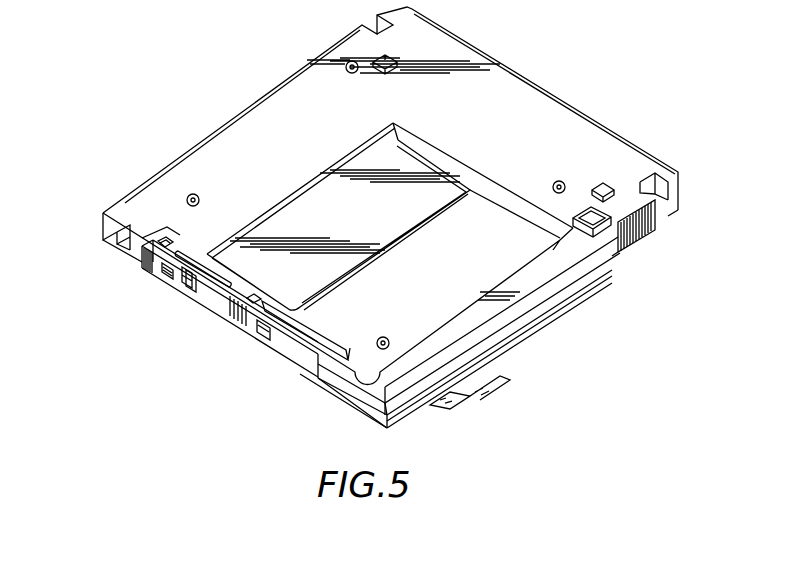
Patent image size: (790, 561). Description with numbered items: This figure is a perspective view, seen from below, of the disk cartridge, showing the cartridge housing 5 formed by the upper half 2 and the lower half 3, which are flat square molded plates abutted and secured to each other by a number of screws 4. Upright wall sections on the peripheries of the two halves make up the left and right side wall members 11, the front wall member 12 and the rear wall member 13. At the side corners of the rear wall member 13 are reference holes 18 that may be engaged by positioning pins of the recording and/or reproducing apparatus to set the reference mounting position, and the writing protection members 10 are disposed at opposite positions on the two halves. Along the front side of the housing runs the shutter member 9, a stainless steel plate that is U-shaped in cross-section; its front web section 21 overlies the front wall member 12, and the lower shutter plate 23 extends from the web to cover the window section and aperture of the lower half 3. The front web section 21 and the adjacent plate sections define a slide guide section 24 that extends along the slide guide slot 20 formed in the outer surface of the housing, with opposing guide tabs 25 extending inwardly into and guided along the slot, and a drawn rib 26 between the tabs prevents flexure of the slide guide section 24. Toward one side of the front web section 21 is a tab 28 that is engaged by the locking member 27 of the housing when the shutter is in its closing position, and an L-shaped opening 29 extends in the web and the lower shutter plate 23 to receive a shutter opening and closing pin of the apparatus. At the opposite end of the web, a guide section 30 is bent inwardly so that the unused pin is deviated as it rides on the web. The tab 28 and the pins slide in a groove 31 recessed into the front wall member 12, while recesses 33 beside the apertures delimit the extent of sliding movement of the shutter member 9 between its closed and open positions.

The upper half 2 is at (557, 297).
The lower half 3 is at (562, 277).
The screws 4 is at (350, 61).
The cartridge housing 5 is at (607, 293).
The shutter member 9 is at (395, 227).
The writing protection members 10 is at (600, 233).
The side wall members 11 is at (515, 327).
The front wall member 12 is at (320, 369).
The rear wall member 13 is at (533, 83).
The reference holes 18 is at (392, 58).
The slide guide slots 20 is at (312, 335).
The front web section 21 is at (236, 313).
The lower shutter plate 23 is at (312, 190).
The slide guide section 24 is at (160, 231).
The guide tabs 25 is at (160, 256).
The rib 26 is at (230, 275).
The locking member 27 is at (190, 290).
The tab 28 is at (166, 279).
The opening 29 is at (185, 278).
The guide section 30 is at (270, 340).
The groove 31 is at (128, 248).
The recesses 33 is at (468, 304).